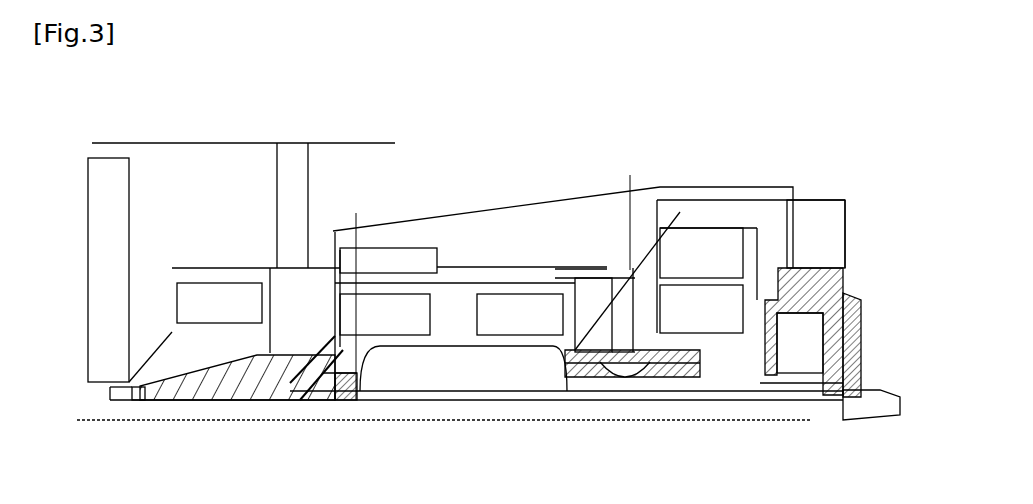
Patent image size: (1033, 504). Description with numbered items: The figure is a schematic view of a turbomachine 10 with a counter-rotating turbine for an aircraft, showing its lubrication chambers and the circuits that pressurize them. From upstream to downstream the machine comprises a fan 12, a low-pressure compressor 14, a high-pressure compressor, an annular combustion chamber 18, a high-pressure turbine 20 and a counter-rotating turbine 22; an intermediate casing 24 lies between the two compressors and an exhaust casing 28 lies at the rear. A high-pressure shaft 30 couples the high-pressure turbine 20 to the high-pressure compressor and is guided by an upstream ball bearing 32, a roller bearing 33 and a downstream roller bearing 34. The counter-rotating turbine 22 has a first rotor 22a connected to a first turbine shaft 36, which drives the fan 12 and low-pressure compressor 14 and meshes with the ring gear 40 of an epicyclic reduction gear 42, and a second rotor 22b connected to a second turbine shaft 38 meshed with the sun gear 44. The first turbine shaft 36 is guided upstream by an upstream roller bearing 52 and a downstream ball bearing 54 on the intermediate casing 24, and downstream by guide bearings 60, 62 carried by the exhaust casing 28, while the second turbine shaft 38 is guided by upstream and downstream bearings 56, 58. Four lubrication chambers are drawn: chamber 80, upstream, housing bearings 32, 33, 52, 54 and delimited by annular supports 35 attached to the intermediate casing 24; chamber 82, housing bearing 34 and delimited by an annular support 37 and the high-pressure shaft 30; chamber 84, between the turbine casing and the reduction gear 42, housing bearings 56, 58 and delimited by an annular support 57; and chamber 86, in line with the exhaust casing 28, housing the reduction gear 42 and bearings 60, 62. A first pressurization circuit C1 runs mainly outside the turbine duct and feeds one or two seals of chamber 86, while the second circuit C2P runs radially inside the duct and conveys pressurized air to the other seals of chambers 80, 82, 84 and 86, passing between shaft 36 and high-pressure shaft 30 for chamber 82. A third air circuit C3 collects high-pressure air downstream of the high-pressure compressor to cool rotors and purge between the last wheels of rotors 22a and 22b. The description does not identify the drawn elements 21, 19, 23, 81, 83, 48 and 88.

The turbomachine 10 is at (729, 83).
The fan 12 is at (83, 277).
The low-pressure compressor 14 is at (202, 278).
The intermediate casing 24 is at (268, 254).
The upstream roller bearing 52 is at (145, 402).
The downstream ball bearing 54 is at (218, 402).
The lubrication chamber 80 is at (258, 402).
The counter-rotating turbine 22 is at (300, 357).
The annular supports 35 is at (236, 378).
The housing wall 21 is at (338, 290).
The annular combustion chamber 18 is at (368, 288).
The first pressurization circuit C1 is at (435, 295).
The battery module 19 is at (463, 332).
The high-pressure turbine 20 is at (487, 288).
The third air circuit C3 is at (503, 267).
The exhaust casing 28 is at (557, 267).
The annular support 37 is at (569, 287).
The second rotor 22b is at (627, 214).
The annular support 57 is at (633, 340).
The first rotor 22a is at (684, 220).
The motor unit 23 is at (718, 218).
The first turbine shaft 36 is at (767, 272).
The cover 81 is at (803, 220).
The upstream guide bearing 60 is at (848, 273).
The ring gear 40 is at (850, 290).
The mechanical reduction gear 42 is at (855, 310).
The bolt 83 is at (862, 335).
The nut 48 is at (862, 350).
The washer 88 is at (865, 372).
The sun gear 44 is at (805, 399).
The downstream guide bearing 62 is at (865, 424).
The second turbine shaft 38 is at (513, 403).
The high-pressure shaft 30 is at (455, 392).
The second pressurization circuit C2P is at (438, 348).
The downstream roller bearing 34 is at (583, 379).
The lubrication chamber 82 is at (563, 379).
The lubrication chamber 84 is at (637, 401).
The upstream guide bearing 56 is at (690, 377).
The downstream guide bearing 58 is at (693, 336).
The lubrication chamber 86 is at (720, 399).
The upstream ball bearing 32 is at (337, 401).
The roller bearing 33 is at (344, 368).